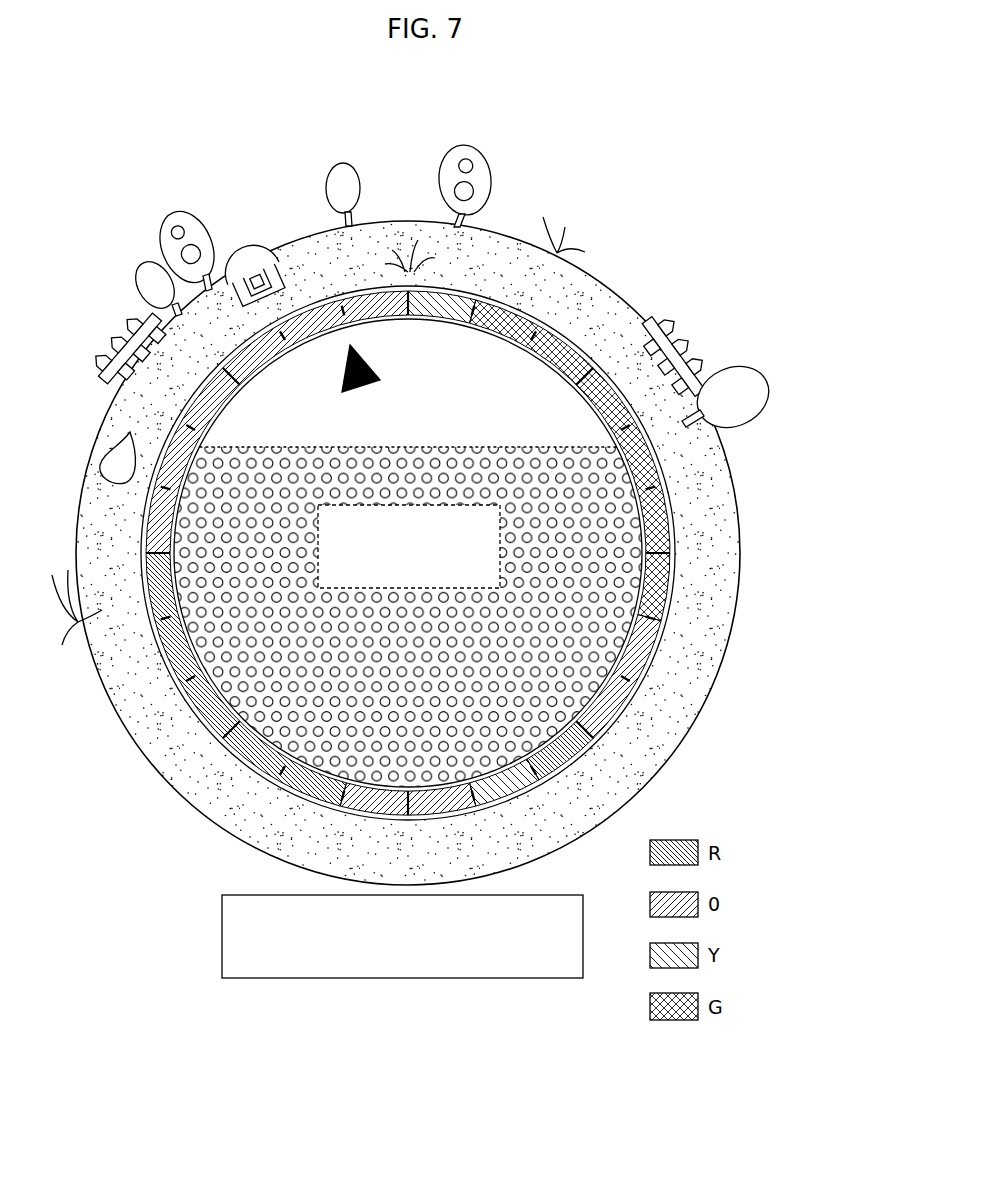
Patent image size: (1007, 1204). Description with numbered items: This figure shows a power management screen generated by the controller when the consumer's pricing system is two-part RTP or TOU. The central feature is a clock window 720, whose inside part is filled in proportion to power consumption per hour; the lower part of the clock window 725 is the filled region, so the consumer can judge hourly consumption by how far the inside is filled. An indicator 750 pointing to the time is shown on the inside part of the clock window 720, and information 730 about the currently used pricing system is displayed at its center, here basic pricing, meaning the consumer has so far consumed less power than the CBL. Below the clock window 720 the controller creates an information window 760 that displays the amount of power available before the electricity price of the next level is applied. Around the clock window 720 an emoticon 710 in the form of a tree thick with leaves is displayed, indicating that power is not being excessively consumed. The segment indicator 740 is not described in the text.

The emoticon 710 is at (486, 158).
The clock window 720 is at (517, 385).
The lower part of the clock window 725 is at (598, 532).
The information about the currently used pricing system 730 is at (500, 563).
The pricing level segment indicator 740 is at (638, 640).
The indicator 750 is at (368, 356).
The information window 760 is at (400, 980).